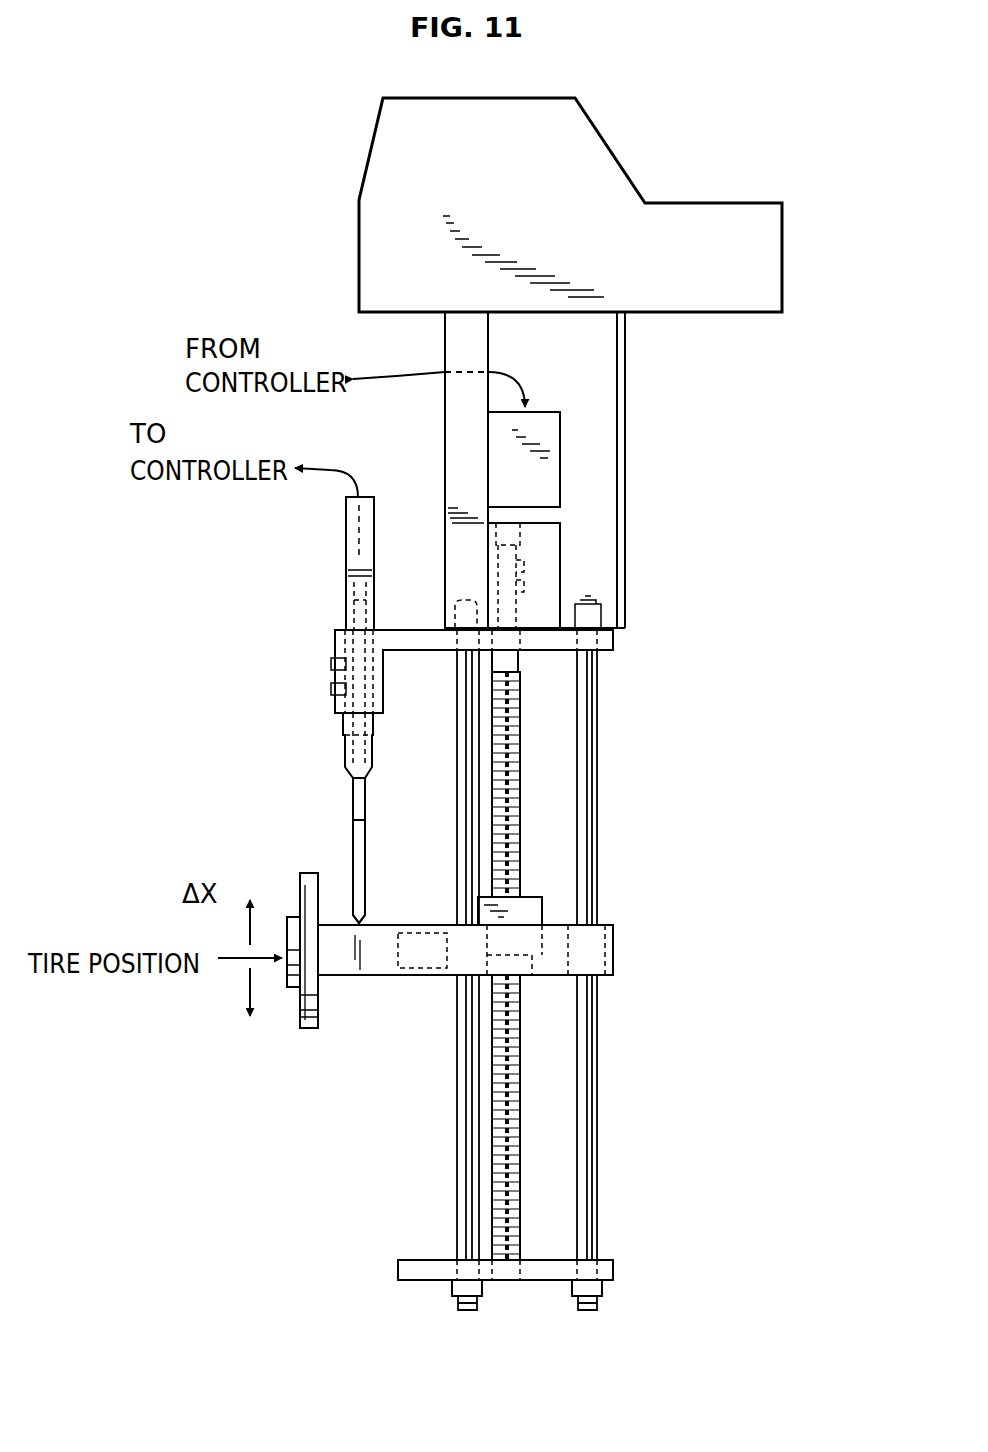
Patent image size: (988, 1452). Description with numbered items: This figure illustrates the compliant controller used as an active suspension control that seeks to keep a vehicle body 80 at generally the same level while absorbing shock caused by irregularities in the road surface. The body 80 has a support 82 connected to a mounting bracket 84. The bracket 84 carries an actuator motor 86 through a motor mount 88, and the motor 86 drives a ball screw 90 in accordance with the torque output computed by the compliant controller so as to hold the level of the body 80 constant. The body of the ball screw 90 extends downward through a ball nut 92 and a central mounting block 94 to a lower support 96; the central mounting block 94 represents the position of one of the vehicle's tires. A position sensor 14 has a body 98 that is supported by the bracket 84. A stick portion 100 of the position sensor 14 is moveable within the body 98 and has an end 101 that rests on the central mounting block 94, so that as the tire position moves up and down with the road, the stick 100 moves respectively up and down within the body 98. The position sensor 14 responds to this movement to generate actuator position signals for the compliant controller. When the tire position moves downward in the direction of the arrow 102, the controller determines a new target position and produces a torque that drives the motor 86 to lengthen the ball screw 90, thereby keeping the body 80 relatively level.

The position sensor 14 is at (328, 528).
The body 80 is at (775, 275).
The support 82 is at (452, 461).
The mounting bracket 84 is at (424, 646).
The actuator motor 86 is at (557, 480).
The motor mount 88 is at (555, 575).
The ball screw 90 is at (526, 722).
The ball nut 92 is at (530, 910).
The central mounting block 94 is at (613, 948).
The lower support 96 is at (562, 1262).
The body 98 is at (350, 583).
The stick portion 100 is at (353, 800).
The end 101 is at (363, 921).
The arrow 102 is at (248, 990).